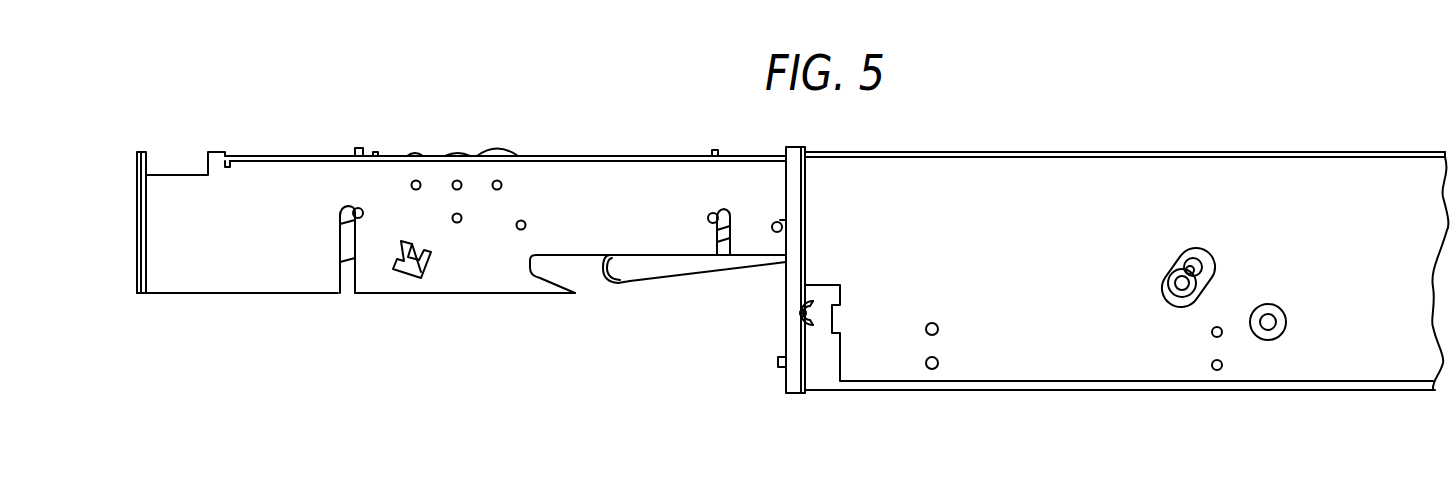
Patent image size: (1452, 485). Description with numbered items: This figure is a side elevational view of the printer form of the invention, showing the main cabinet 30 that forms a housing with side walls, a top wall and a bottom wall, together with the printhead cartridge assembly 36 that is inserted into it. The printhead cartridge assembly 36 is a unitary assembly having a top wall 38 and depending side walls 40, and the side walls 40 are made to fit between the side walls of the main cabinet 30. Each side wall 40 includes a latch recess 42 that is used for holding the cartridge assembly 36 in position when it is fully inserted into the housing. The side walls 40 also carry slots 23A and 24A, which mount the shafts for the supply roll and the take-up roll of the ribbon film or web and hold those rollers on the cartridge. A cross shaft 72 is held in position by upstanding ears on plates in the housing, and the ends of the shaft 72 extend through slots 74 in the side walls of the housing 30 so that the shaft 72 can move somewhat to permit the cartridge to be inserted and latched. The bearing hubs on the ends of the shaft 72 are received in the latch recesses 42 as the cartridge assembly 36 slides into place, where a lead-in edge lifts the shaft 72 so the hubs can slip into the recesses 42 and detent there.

The main cabinet 30 is at (1082, 190).
The printhead cartridge assembly 36 is at (459, 144).
The top wall 38 is at (547, 158).
The side walls 40 is at (602, 195).
The latch recess 42 is at (545, 266).
The slot 23A is at (347, 282).
The slot 24A is at (722, 246).
The cross shaft 72 is at (1176, 287).
The slot 74 is at (1193, 262).